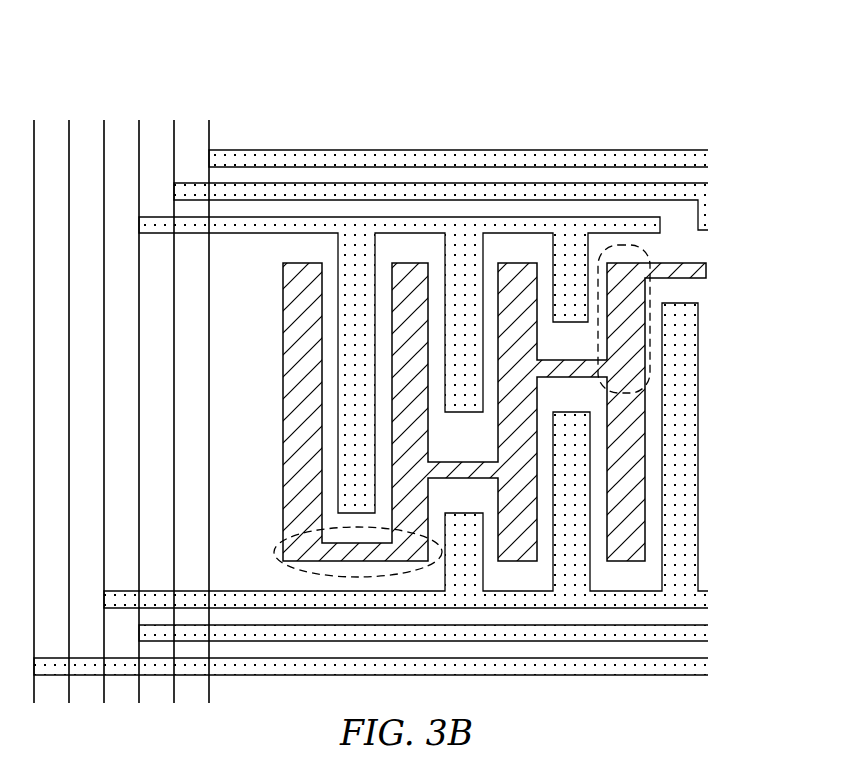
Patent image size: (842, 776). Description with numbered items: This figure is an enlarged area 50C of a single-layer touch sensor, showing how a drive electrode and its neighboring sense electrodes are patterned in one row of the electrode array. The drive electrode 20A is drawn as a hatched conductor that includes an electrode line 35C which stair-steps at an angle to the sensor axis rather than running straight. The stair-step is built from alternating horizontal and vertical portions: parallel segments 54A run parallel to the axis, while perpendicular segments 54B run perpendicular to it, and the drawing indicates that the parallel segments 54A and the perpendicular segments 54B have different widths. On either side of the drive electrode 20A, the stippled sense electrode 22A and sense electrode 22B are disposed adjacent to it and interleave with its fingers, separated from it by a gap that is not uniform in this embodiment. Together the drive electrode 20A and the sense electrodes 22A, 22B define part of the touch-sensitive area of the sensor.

The enlarged area 50C is at (520, 86).
The sense electrode 22A is at (568, 240).
The sense electrode 22B is at (680, 580).
The drive electrode 20A is at (283, 412).
The electrode line 35C is at (718, 262).
The parallel segments 54A is at (580, 365).
The perpendicular segments 54B is at (640, 252).